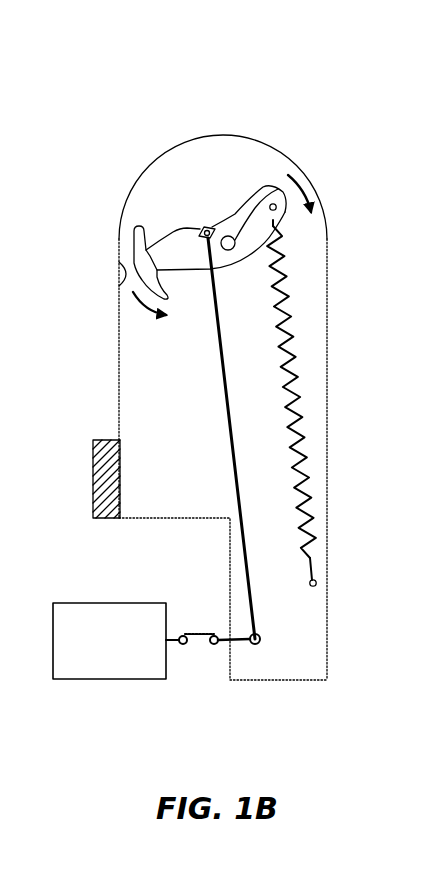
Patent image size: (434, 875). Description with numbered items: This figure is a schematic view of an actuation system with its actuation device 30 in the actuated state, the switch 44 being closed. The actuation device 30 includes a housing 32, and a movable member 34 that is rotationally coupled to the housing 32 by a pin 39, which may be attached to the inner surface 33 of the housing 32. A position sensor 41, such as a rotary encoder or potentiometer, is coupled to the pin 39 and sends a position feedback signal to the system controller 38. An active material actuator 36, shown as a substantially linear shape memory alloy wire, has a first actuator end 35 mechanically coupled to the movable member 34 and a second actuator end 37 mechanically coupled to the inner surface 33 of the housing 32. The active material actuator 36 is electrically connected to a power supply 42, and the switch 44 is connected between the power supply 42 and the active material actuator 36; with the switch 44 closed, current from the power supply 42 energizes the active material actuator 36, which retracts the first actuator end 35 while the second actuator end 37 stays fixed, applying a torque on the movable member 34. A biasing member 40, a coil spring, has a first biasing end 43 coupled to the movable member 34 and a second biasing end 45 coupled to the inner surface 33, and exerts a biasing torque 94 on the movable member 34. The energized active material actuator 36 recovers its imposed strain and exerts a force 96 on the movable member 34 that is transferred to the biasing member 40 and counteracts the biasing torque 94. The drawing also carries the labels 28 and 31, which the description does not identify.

The launcher assembly 28 is at (237, 48).
The actuation device 30 is at (206, 104).
The housing wall 31 is at (120, 252).
The housing 32 is at (119, 337).
The inner surface 33 is at (119, 288).
The movable member 34 is at (135, 232).
The first actuator end 35 is at (208, 226).
The active material actuator 36 is at (218, 342).
The second actuator end 37 is at (259, 644).
The system controller 38 is at (107, 478).
The pin 39 is at (229, 236).
The biasing member 40 is at (290, 335).
The position sensor 41 is at (280, 187).
The power supply 42 is at (108, 681).
The first biasing end 43 is at (277, 208).
The switch 44 is at (197, 632).
The second biasing end 45 is at (318, 582).
The biasing torque 94 is at (302, 182).
The force 96 is at (124, 310).